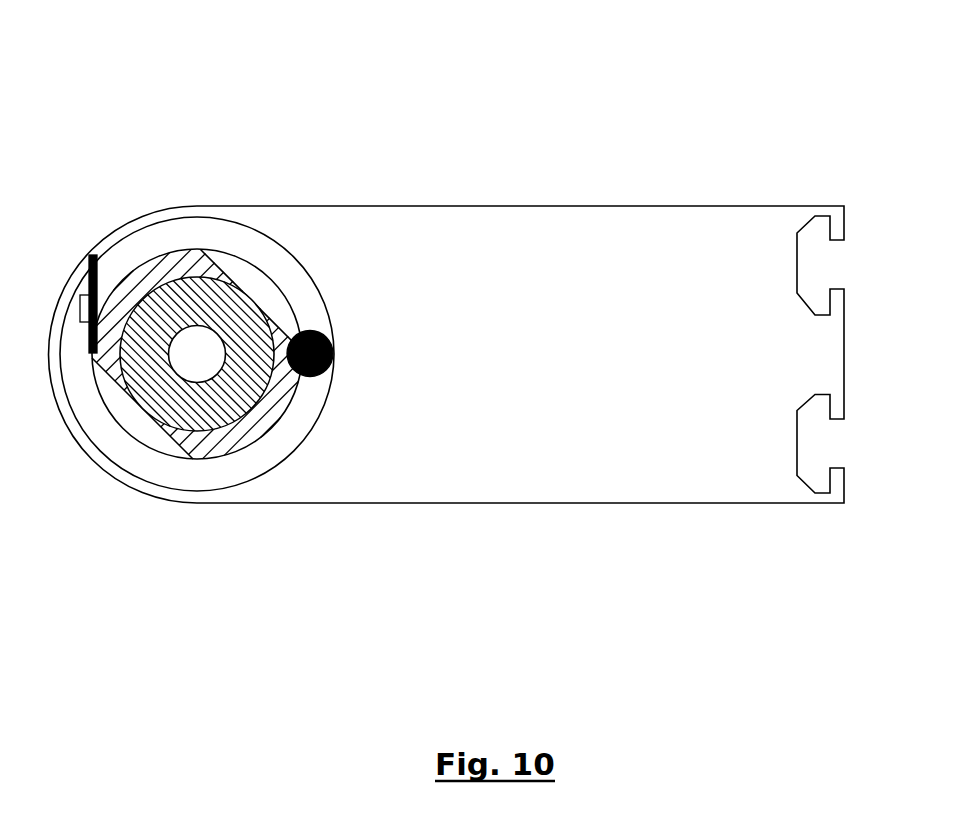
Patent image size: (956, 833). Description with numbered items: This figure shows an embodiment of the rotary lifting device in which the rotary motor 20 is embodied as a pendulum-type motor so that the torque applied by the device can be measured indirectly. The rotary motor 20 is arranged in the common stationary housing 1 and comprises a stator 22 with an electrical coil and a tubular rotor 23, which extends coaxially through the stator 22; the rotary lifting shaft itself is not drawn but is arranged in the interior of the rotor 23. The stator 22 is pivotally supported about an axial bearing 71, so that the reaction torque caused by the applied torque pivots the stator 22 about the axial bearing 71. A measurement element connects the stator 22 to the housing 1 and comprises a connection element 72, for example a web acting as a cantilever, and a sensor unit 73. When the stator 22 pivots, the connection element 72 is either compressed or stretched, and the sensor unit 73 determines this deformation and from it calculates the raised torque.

The housing 1 is at (686, 202).
The rotary motor 20 is at (292, 278).
The stator 22 is at (142, 428).
The rotor 23 is at (207, 407).
The axial bearing 71 is at (310, 377).
The connection element 72 is at (92, 259).
The sensor unit 73 is at (85, 293).